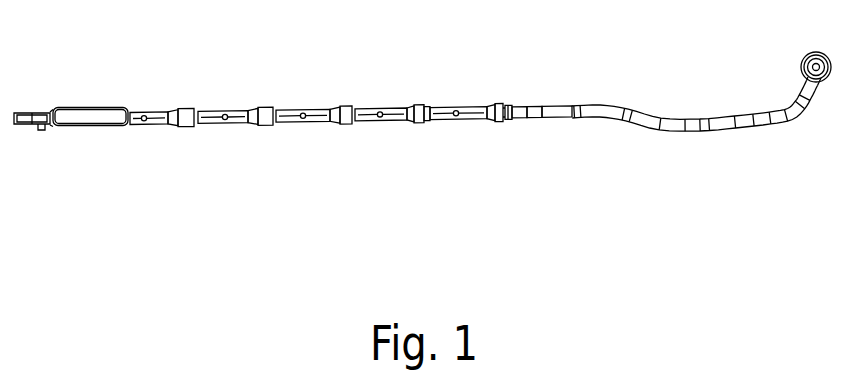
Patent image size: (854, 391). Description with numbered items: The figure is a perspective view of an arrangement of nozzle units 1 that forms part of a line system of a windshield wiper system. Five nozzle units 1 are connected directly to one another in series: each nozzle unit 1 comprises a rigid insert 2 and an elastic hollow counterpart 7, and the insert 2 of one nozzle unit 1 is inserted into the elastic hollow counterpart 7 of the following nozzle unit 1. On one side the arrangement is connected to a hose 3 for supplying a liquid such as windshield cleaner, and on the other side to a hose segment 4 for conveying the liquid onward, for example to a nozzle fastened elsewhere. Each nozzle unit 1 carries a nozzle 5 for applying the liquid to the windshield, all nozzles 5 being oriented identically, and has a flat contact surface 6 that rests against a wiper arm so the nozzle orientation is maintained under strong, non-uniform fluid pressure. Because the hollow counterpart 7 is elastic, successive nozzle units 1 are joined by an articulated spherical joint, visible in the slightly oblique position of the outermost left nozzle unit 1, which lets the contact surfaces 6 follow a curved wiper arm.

The nozzle unit 1 is at (322, 107).
The rigid insert 2 is at (430, 105).
The hose 3 is at (624, 122).
The hose segment 4 is at (108, 126).
The nozzle 5 is at (375, 122).
The flat contact surface 6 is at (228, 107).
The elastic hollow counterpart 7 is at (262, 125).